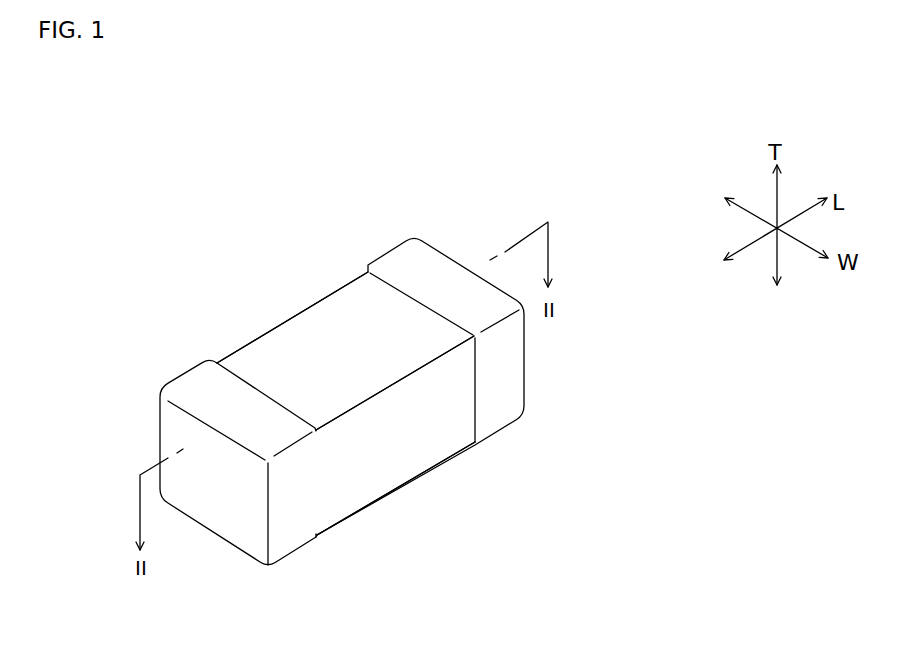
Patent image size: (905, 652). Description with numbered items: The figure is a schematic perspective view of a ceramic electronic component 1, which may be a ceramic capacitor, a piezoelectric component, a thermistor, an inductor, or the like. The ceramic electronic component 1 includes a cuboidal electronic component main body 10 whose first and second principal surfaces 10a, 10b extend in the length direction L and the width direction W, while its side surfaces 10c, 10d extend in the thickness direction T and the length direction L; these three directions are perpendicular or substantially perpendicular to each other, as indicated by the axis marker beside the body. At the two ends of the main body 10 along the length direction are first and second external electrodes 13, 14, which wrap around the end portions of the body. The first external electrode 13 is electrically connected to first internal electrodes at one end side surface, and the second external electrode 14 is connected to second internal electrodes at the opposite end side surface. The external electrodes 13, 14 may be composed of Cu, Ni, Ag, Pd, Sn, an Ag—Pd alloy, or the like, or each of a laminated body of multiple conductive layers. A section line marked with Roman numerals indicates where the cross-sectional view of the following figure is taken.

The ceramic electronic component 1 is at (338, 369).
The electronic component main body 10 is at (346, 398).
The first principal surface 10a is at (321, 325).
The second principal surface 10b is at (382, 500).
The side surface 10c is at (352, 277).
The side surface 10d is at (342, 502).
The first external electrode 13 is at (157, 441).
The second external electrode 14 is at (527, 364).